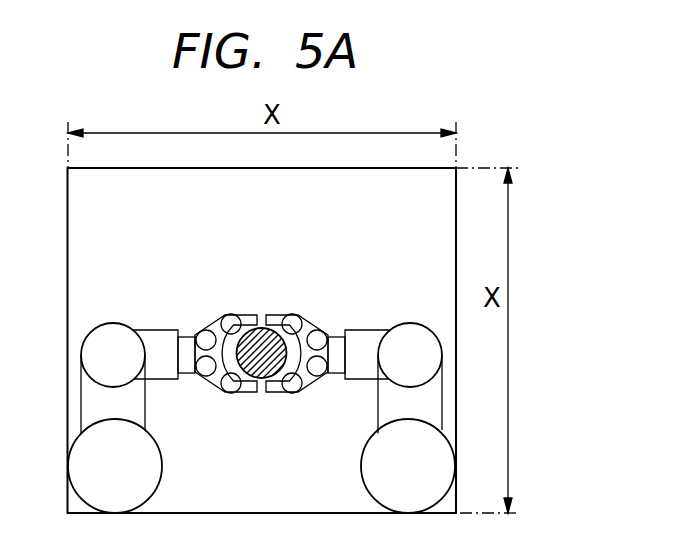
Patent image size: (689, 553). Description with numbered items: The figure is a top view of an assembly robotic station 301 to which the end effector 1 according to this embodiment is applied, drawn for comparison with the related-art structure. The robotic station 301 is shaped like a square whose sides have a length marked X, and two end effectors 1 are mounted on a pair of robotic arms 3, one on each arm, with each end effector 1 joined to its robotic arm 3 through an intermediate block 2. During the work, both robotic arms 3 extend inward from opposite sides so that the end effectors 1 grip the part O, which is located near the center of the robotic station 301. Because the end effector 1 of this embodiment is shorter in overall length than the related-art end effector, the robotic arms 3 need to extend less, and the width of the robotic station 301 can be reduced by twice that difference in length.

The end effector 1 is at (218, 306).
The block 2 is at (189, 336).
The robotic arm 3 is at (107, 330).
The part O is at (259, 346).
The robotic station 301 is at (522, 340).